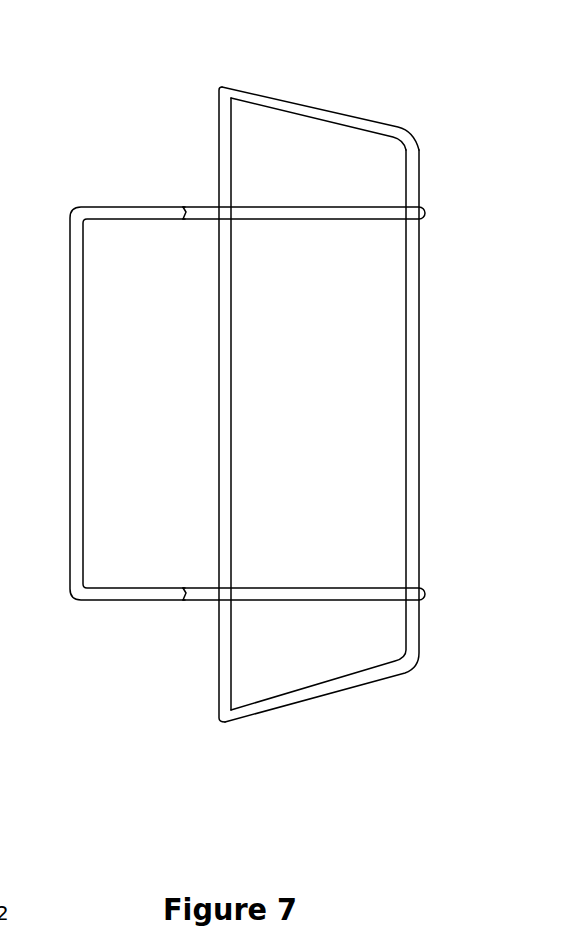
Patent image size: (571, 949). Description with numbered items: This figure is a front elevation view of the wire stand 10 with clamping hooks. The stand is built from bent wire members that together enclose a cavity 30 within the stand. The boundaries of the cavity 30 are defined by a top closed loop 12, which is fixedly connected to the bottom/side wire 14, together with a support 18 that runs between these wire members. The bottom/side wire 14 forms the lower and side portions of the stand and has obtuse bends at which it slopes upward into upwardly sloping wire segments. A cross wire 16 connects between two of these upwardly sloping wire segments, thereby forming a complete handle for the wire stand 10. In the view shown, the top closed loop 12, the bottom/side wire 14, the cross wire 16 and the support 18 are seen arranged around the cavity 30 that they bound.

The wire stand 10 is at (251, 380).
The top closed loop 12 is at (227, 115).
The bottom/side wire 14 is at (387, 213).
The cross wire 16 is at (77, 388).
The support 18 is at (313, 108).
The cavity 30 is at (248, 163).